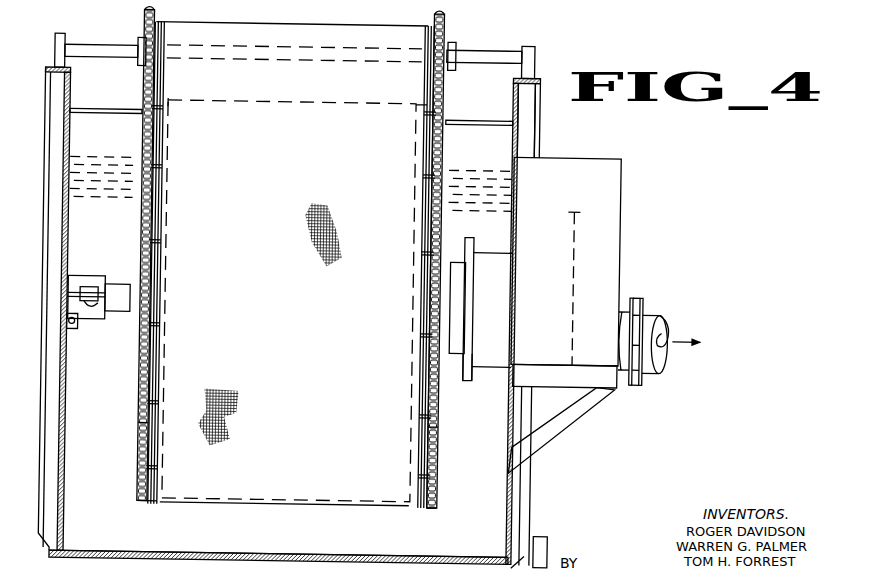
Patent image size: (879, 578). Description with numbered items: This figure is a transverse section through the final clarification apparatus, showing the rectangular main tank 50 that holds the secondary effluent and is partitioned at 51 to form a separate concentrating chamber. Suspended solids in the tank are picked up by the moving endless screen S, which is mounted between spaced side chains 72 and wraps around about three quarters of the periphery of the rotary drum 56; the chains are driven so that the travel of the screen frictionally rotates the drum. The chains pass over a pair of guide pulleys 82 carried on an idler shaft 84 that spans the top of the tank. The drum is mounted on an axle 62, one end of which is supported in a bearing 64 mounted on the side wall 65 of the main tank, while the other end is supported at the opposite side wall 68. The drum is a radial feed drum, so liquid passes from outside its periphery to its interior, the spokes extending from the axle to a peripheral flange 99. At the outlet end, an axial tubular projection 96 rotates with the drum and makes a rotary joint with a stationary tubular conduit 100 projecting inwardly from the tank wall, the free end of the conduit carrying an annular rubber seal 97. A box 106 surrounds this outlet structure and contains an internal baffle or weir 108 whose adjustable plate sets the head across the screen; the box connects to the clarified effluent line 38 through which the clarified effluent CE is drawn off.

The clarified effluent line 38 is at (622, 308).
The main tank 50 is at (521, 485).
The partition 51 is at (500, 134).
The rotary drum 56 is at (402, 101).
The axle 62 is at (125, 285).
The bearing 64 is at (93, 323).
The side wall 65 is at (66, 386).
The opposite side wall 68 is at (510, 520).
The side chains 72 is at (130, 431).
The guide pulleys 82 is at (139, 24).
The idler shaft 84 is at (506, 51).
The axial tubular projection 96 is at (449, 261).
The annular rubber seal 97 is at (469, 377).
The peripheral flange 99 is at (137, 112).
The stationary tubular conduit 100 is at (496, 255).
The box 106 is at (618, 188).
The internal baffle or weir 108 is at (572, 216).
The endless screen S is at (230, 483).